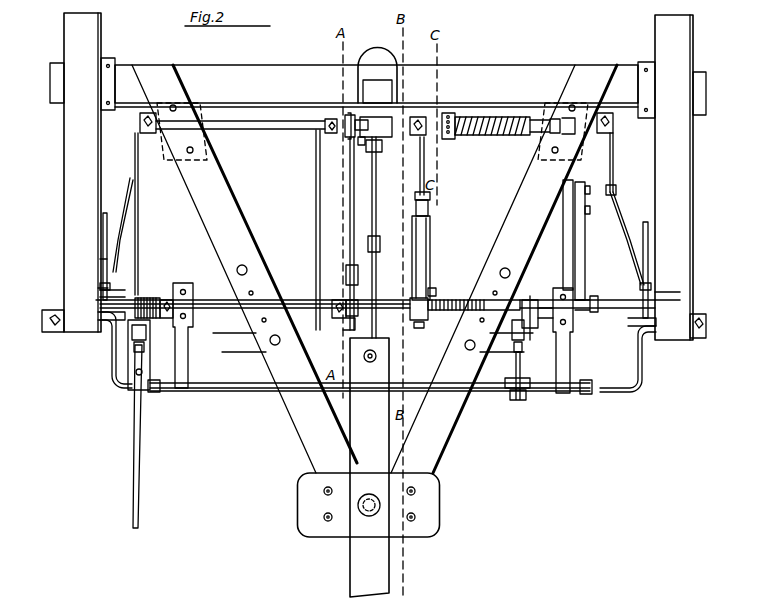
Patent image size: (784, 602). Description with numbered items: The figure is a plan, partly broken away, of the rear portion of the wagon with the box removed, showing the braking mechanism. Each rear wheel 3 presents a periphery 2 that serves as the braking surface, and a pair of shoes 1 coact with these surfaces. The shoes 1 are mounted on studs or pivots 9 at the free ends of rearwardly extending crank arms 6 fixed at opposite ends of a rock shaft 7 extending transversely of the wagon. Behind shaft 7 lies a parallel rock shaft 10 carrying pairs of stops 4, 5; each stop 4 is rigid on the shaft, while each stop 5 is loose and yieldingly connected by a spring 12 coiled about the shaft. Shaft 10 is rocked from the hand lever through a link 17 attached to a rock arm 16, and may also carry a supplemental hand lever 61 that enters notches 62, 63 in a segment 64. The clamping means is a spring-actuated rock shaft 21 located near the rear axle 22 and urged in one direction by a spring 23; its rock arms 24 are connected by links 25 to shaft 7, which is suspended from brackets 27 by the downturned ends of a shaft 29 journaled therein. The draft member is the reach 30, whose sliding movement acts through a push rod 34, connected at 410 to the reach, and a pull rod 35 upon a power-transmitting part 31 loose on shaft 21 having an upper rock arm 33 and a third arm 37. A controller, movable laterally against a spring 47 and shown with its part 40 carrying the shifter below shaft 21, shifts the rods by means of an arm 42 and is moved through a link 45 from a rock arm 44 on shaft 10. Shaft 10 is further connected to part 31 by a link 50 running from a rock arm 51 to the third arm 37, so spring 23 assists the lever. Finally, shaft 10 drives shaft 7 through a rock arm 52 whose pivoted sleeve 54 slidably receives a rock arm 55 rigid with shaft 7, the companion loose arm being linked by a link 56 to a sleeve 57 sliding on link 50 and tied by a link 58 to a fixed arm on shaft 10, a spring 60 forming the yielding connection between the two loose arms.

The shoes 1 is at (66, 296).
The periphery 2 is at (75, 181).
The rear wheel 3 is at (63, 206).
The stop 4 is at (103, 242).
The stop 5 is at (107, 260).
The crank arms 6 is at (118, 360).
The rock shaft 7 is at (218, 390).
The studs or pivots 9 is at (108, 314).
The rock shaft 10 is at (213, 308).
The spring 12 is at (136, 298).
The rock arm 16 is at (150, 333).
The link 17 is at (137, 448).
The rock shaft 21 is at (248, 125).
The rear axle 22 is at (378, 88).
The spring 23 is at (476, 138).
The rock arms 24 is at (139, 120).
The links 25 is at (134, 155).
The brackets 27 is at (189, 356).
The shaft 29 is at (195, 390).
The reach 30 is at (369, 323).
The power-transmitting part 31 is at (394, 128).
The rock arm 33 is at (377, 91).
The push rod 34 is at (375, 259).
The pull rod 35 is at (377, 178).
The third arm 37 is at (414, 116).
The coupling 40 is at (360, 146).
The arm 42 is at (380, 148).
The rock arm 44 is at (337, 318).
The link 45 is at (350, 208).
The spring 47 is at (344, 138).
The link 50 is at (431, 193).
The rock arm 51 is at (420, 320).
The rock arm 52 is at (533, 298).
The sleeve 54 is at (513, 350).
The rock arm 55 is at (521, 360).
The link 56 is at (431, 250).
The sleeve 57 is at (430, 210).
The link 58 is at (432, 290).
The spring 60 is at (465, 308).
The hand lever 61 is at (568, 340).
The notch 62 is at (590, 210).
The notch 63 is at (589, 189).
The segment 64 is at (586, 229).
The connection 410 is at (378, 354).